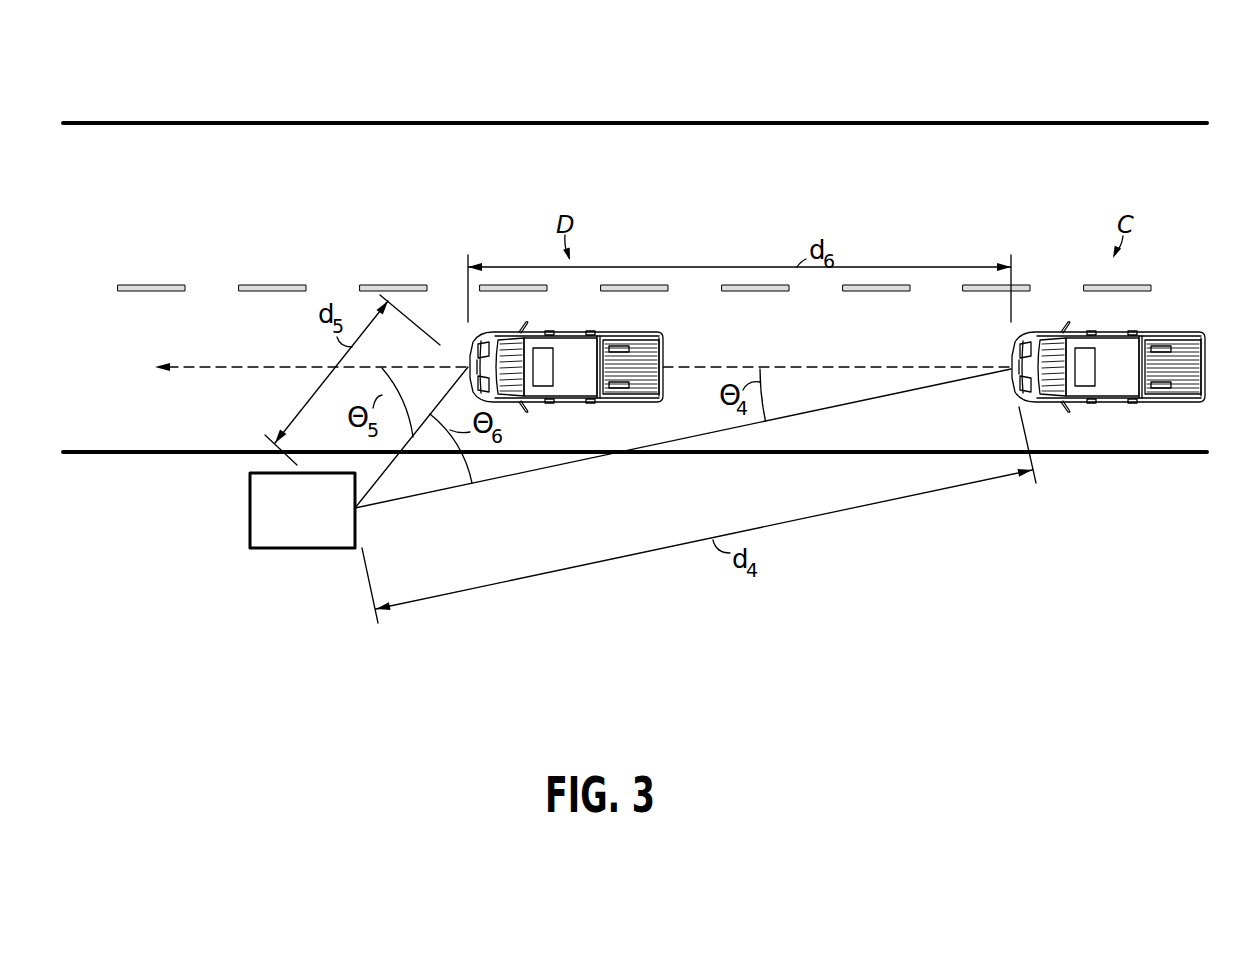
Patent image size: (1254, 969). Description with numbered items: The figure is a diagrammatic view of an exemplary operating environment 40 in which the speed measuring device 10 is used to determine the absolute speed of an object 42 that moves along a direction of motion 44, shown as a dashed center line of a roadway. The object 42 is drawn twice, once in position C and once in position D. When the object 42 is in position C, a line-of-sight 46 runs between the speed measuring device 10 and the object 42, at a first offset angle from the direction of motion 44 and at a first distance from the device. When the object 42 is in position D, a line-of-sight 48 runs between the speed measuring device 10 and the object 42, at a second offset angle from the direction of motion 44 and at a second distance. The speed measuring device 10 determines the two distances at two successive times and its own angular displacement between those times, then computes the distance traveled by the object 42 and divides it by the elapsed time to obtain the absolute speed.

The speed measuring device 10 is at (250, 540).
The operating environment 40 is at (1008, 72).
The object 42 is at (665, 352).
The direction of motion 44 is at (243, 366).
The line-of-sight 46 is at (543, 471).
The line-of-sight 48 is at (397, 456).